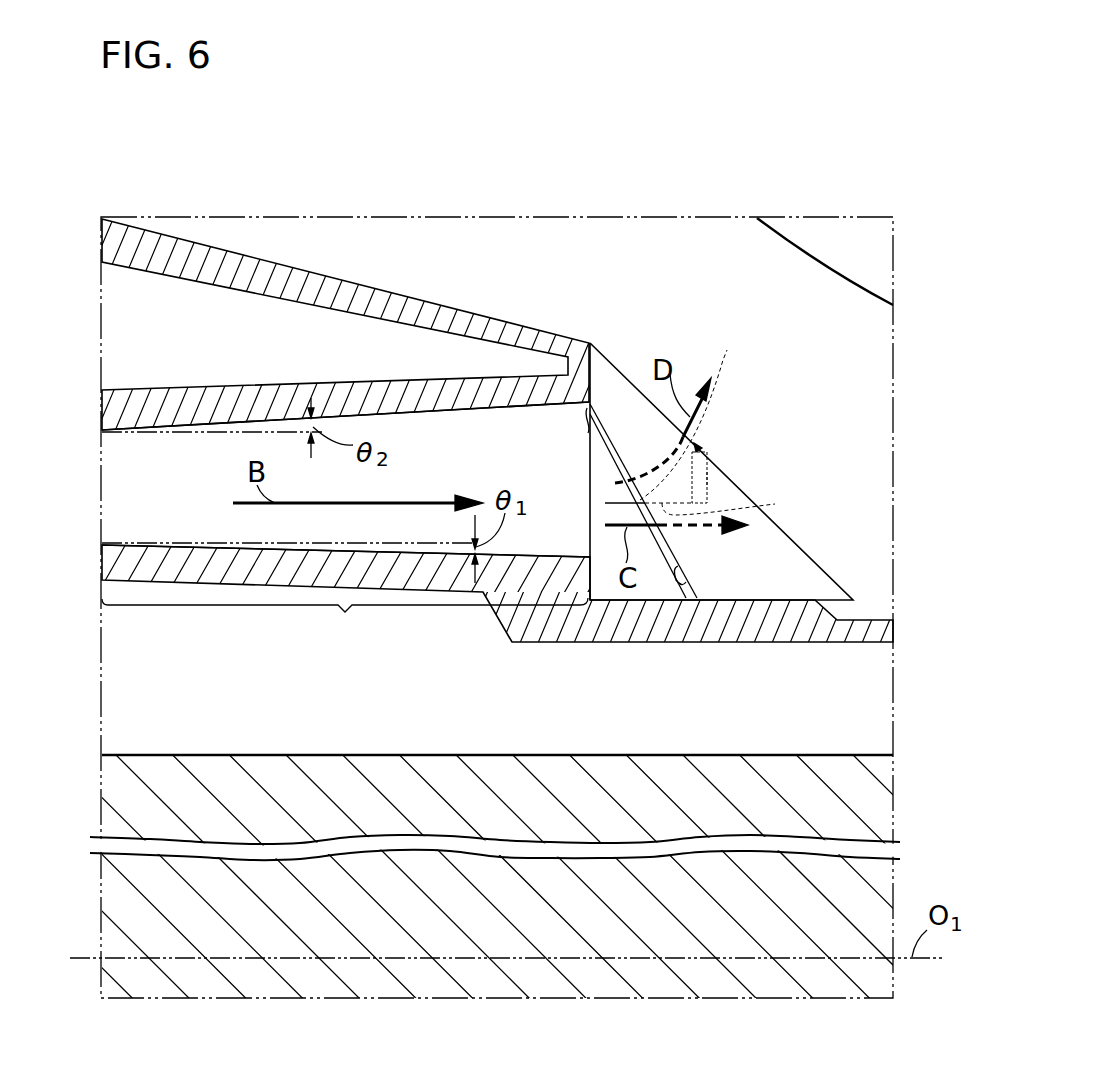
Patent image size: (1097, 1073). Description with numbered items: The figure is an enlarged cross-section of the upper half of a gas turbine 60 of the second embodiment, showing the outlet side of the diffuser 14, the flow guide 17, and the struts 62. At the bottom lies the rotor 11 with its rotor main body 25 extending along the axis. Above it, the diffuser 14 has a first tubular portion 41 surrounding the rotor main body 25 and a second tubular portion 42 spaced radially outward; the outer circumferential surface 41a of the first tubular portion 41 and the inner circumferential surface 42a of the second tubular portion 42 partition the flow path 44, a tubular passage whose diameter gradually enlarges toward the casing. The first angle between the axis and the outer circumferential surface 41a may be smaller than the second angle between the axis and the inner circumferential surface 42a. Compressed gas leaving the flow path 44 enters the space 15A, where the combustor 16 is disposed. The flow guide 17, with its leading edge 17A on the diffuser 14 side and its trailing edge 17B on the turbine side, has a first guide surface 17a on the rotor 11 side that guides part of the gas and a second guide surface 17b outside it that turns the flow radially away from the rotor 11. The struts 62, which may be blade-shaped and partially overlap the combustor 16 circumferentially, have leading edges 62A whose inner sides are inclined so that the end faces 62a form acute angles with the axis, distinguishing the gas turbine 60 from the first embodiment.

The gas turbine 60 is at (139, 146).
The second tubular portion 42 is at (132, 410).
The inner circumferential surface 42a is at (383, 413).
The flow path 44 is at (435, 455).
The first tubular portion 41 is at (152, 563).
The outer circumferential surface 41a is at (237, 545).
The diffuser 14 is at (345, 623).
The space 15A is at (668, 303).
The struts 62 is at (822, 548).
The end faces 62a is at (690, 582).
The leading edges 62A is at (588, 433).
The combustor 16 is at (786, 255).
The flow guide 17 is at (703, 444).
The second guide surface 17b is at (698, 423).
The trailing edge 17B is at (710, 485).
The first guide surface 17a is at (734, 502).
The leading edge 17A is at (605, 503).
The rotor 11 is at (103, 903).
The rotor main body 25 is at (143, 935).